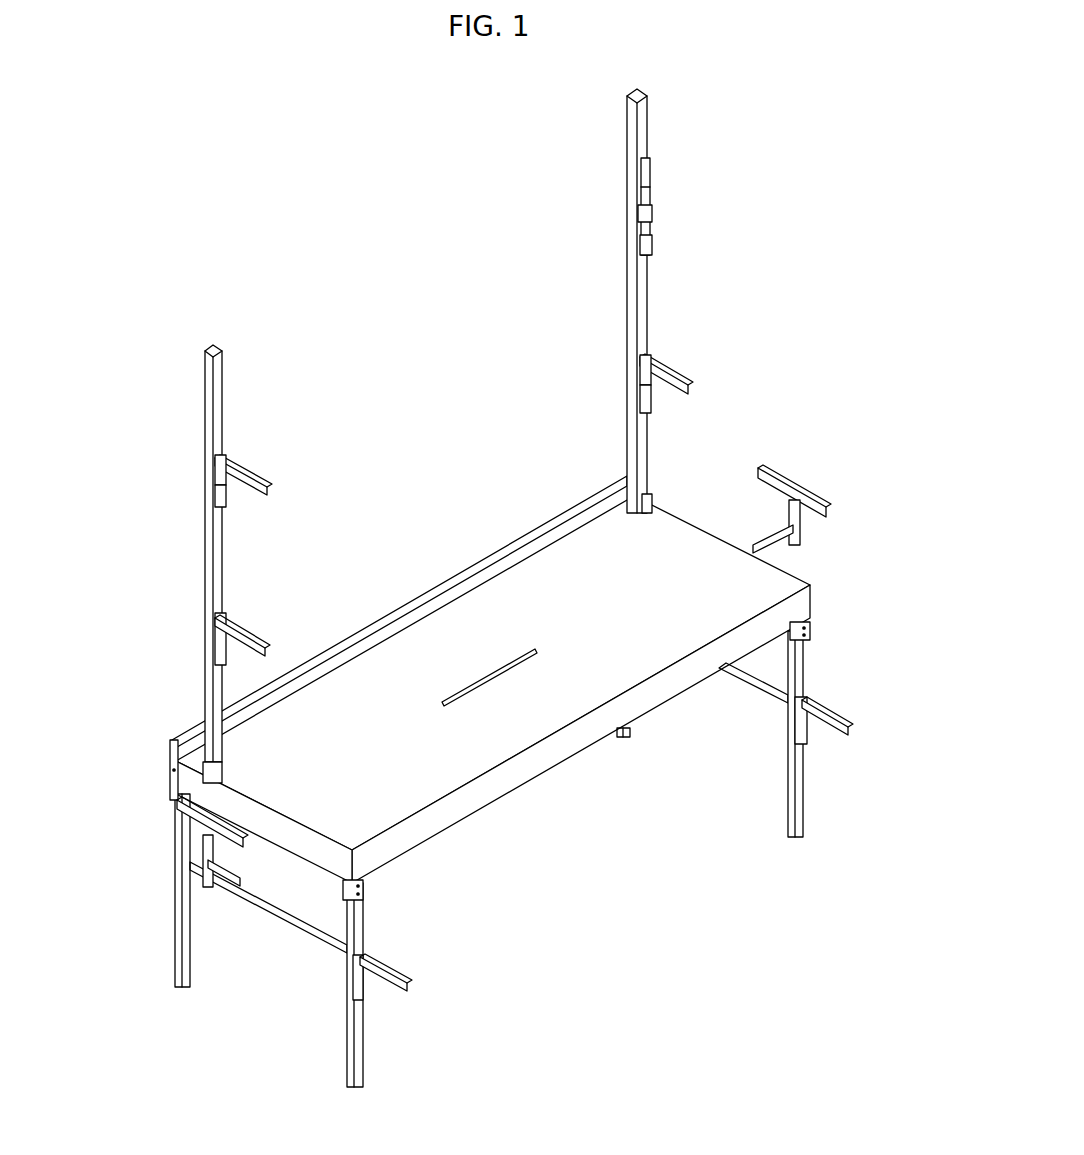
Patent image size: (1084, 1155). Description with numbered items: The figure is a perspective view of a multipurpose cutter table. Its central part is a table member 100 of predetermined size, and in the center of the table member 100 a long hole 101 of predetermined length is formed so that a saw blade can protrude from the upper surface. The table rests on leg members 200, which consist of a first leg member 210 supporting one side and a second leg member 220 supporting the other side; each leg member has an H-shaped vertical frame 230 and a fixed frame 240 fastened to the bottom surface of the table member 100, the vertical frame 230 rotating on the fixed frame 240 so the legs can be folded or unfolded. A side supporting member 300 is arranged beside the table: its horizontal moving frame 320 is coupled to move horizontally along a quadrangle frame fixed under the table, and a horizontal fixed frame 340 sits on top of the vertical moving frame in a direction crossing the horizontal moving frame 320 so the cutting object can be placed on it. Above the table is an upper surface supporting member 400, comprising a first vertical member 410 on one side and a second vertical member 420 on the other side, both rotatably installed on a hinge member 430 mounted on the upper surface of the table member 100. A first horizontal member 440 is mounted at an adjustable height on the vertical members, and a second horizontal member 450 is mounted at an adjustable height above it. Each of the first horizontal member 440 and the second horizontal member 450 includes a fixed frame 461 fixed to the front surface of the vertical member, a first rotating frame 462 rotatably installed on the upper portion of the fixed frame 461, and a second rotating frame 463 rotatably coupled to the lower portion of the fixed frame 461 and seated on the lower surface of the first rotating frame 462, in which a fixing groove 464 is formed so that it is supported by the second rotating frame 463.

The table member 100 is at (493, 689).
The long hole 101 is at (510, 662).
The leg members 200 is at (531, 847).
The first leg member 210 is at (373, 1022).
The second leg member 220 is at (808, 788).
The vertical frame 230 is at (310, 938).
The fixed frame 240 is at (365, 886).
The side supporting member 300 is at (505, 669).
The horizontal moving frame 320 is at (803, 543).
The horizontal fixed frame 340 is at (806, 503).
The upper surface supporting member 400 is at (476, 444).
The first vertical member 410 is at (205, 556).
The second vertical member 420 is at (627, 302).
The hinge member 430 is at (172, 750).
The first horizontal member 440 is at (636, 380).
The second horizontal member 450 is at (451, 371).
The fixed frame 461 is at (652, 222).
The first rotating frame 462 is at (650, 176).
The second rotating frame 463 is at (650, 244).
The fixing groove 464 is at (650, 187).